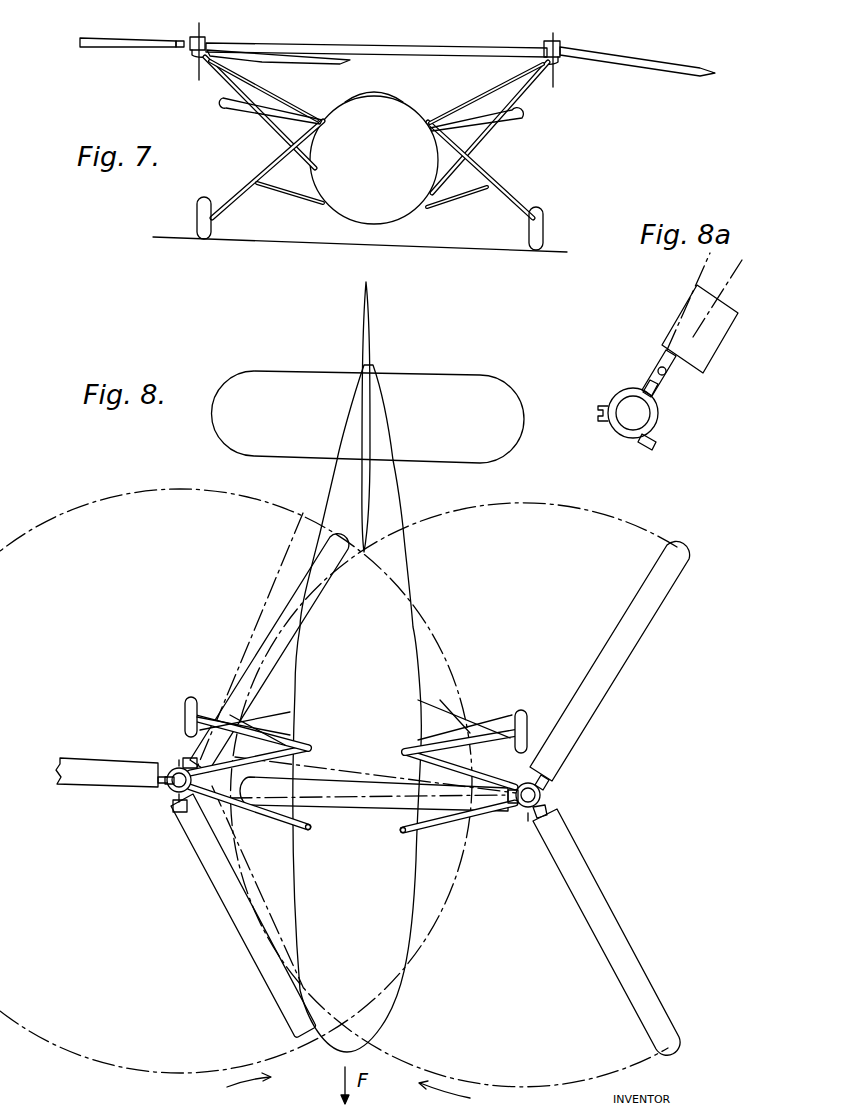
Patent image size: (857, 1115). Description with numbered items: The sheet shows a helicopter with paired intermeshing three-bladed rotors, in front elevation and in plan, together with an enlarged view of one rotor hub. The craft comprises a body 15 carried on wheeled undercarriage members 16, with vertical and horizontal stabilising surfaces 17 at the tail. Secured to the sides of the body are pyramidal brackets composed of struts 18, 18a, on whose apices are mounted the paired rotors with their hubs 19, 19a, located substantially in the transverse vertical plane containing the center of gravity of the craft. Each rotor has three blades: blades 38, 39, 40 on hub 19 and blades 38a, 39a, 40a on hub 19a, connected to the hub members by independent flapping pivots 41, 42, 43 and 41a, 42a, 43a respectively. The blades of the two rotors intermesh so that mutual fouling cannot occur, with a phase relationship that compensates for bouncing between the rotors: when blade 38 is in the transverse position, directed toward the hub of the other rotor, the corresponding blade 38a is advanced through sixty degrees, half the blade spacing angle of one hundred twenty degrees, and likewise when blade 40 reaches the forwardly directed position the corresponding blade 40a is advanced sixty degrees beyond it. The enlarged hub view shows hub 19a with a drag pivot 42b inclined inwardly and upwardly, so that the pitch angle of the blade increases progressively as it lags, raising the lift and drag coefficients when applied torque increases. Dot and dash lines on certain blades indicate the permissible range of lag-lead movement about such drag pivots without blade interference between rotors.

In FIG. 7, the body 15 is at (374, 158).
In FIG. 8, the body 15 is at (382, 953).
In FIG. 7, the wheeled undercarriage members 16 is at (465, 197).
In FIG. 8, the wheeled undercarriage members 16 is at (188, 700).
In FIG. 7, the vertical and horizontal stabilising surfaces 17 is at (237, 107).
In FIG. 8, the vertical and horizontal stabilising surfaces 17 is at (437, 375).
In FIG. 7, the struts 18 is at (503, 107).
In FIG. 8, the struts 18 is at (432, 823).
In FIG. 7, the struts 18a is at (280, 97).
In FIG. 8, the struts 18a is at (250, 822).
In FIG. 7, the hub 19 is at (561, 46).
In FIG. 8, the hub 19 is at (541, 793).
In FIG. 7, the hub 19a is at (198, 37).
In FIG. 8A, the hub 19a is at (651, 424).
In FIG. 8, the hub 19a is at (175, 788).
In FIG. 7, the blade 38 is at (485, 50).
In FIG. 8, the blade 38 is at (373, 790).
In FIG. 8, the blade 38a is at (257, 647).
In FIG. 8, the blade 39 is at (618, 648).
In FIG. 7, the blade 39a is at (117, 44).
In FIG. 8, the blade 39a is at (100, 768).
In FIG. 7, the blade 40 is at (658, 71).
In FIG. 8, the blade 40 is at (610, 933).
In FIG. 7, the blade 40a is at (247, 48).
In FIG. 8, the blade 40a is at (238, 905).
In FIG. 8, the flapping pivot 41 is at (515, 810).
In FIG. 8, the flapping pivot 41a is at (185, 766).
In FIG. 8A, the flapping pivot 42 is at (657, 396).
In FIG. 8, the flapping pivot 42 is at (547, 780).
In FIG. 8, the flapping pivot 42a is at (167, 785).
In FIG. 8A, the drag pivot 42b is at (668, 373).
In FIG. 8, the flapping pivot 43 is at (553, 810).
In FIG. 8, the flapping pivot 43a is at (180, 813).